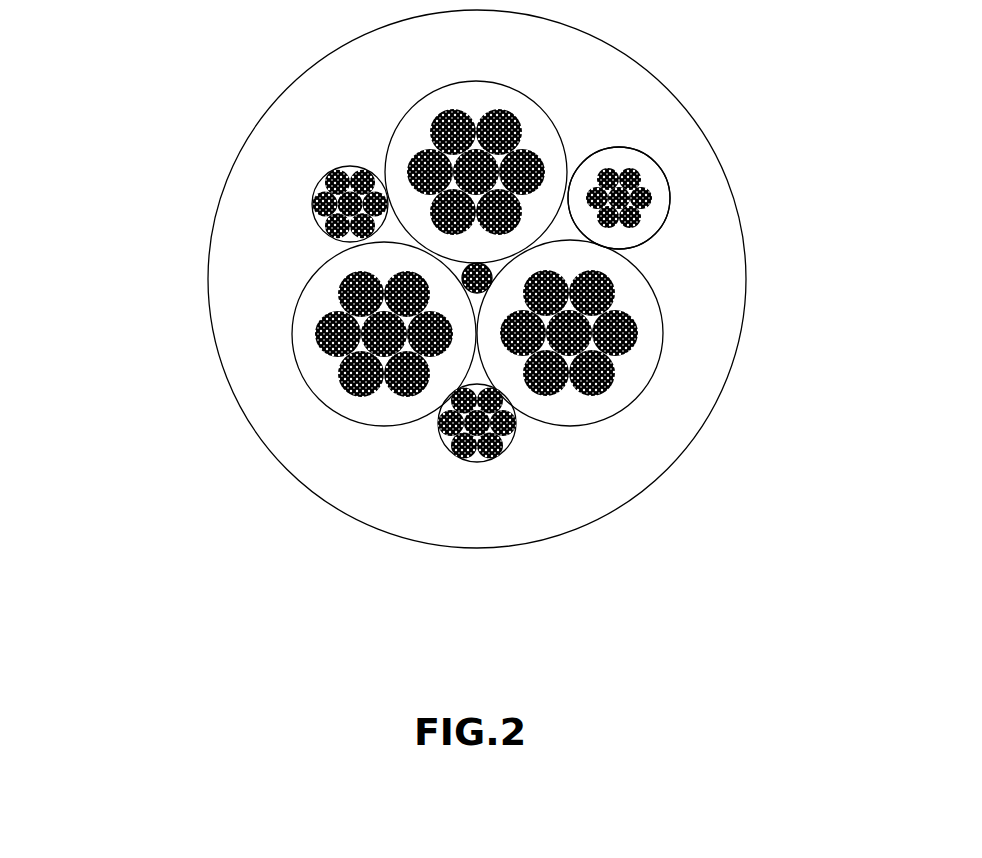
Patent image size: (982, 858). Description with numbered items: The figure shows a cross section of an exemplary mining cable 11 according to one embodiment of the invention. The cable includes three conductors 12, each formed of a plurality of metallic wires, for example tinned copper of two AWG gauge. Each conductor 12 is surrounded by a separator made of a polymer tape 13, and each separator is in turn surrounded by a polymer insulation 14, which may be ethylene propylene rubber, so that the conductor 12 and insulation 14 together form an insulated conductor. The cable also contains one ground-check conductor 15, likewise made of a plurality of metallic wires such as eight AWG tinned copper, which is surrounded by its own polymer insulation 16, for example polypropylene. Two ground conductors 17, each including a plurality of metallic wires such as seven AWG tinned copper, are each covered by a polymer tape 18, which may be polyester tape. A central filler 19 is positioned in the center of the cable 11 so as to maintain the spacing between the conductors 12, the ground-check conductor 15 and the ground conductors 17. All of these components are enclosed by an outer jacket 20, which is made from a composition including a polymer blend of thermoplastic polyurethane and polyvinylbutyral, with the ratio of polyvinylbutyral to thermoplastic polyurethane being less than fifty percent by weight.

The mining cable 11 is at (158, 102).
The conductor 12 is at (326, 362).
The polymer tape 13 is at (634, 291).
The polymer insulation 14 is at (392, 147).
The ground-check conductor 15 is at (658, 186).
The polymer insulation 16 is at (660, 152).
The ground conductor 17 is at (521, 455).
The polymer tape 18 is at (296, 208).
The central filler 19 is at (448, 278).
The outer jacket 20 is at (600, 40).